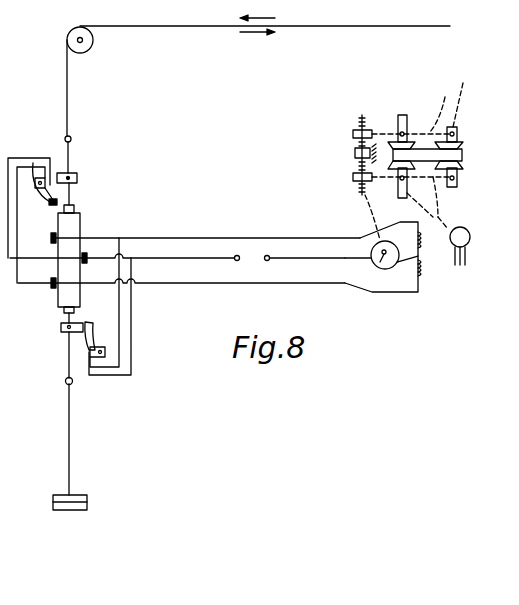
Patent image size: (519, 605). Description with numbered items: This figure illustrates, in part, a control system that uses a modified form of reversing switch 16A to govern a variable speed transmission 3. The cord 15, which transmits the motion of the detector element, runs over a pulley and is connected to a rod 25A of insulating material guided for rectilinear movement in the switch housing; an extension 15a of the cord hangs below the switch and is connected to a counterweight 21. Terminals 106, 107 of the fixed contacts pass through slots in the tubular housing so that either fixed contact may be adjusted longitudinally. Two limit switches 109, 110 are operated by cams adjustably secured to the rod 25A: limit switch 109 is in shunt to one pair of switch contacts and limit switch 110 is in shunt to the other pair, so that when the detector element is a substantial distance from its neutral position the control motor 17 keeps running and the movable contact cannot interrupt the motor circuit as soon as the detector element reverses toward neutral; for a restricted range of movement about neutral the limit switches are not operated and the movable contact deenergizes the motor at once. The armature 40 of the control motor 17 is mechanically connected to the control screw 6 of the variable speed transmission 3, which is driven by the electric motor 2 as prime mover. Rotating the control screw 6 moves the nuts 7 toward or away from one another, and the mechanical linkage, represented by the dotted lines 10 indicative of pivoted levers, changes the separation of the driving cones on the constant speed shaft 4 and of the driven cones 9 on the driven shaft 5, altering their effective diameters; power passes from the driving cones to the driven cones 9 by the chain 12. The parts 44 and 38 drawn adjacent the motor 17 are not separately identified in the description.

The cord 15 is at (188, 28).
The extension of the cord 15a is at (71, 435).
The counterweight 21 is at (88, 497).
The rod 25A is at (78, 188).
The cylinder 16A is at (126, 221).
The terminal 106 is at (50, 238).
The terminal 107 is at (50, 288).
The limit switch 109 is at (95, 323).
The limit switch 110 is at (48, 155).
The control motor 17 is at (381, 257).
The armature 40 is at (366, 266).
The coil 44 is at (422, 242).
The coil 38 is at (422, 276).
The electric motor 2 is at (468, 230).
The variable speed transmission 3 is at (430, 113).
The shaft 4 is at (405, 188).
The driven shaft 5 is at (457, 185).
The control screw 6 is at (368, 112).
The nuts 7 is at (352, 134).
The driven cones 9 is at (457, 136).
The dotted lines 10 is at (414, 161).
The chain 12 is at (462, 155).